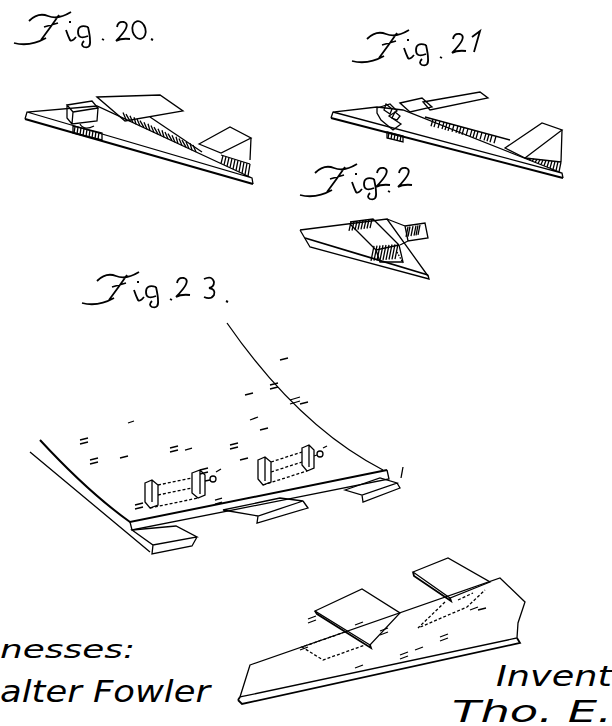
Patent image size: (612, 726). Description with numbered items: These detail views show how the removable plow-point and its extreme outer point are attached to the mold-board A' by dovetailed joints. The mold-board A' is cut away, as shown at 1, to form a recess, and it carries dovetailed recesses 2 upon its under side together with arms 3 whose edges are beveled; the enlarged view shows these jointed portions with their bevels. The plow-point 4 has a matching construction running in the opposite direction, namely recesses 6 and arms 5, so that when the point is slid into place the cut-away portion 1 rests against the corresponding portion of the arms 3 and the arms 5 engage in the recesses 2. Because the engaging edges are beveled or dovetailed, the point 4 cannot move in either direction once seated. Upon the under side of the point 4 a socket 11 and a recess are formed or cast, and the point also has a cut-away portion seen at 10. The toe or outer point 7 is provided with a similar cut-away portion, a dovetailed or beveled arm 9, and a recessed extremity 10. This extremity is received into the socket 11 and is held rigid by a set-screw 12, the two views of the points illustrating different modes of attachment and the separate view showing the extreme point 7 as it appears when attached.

In FIG. 20, the plow-point 4 is at (139, 142).
In FIG. 21, the plow-point 4 is at (447, 142).
In FIG. 23, the plow-point 4 is at (506, 624).
In FIG. 20, the arms 5 is at (271, 117).
In FIG. 21, the arms 5 is at (501, 87).
In FIG. 23, the arms 5 is at (451, 593).
In FIG. 20, the recesses 6 is at (188, 112).
In FIG. 21, the recesses 6 is at (480, 122).
In FIG. 23, the recesses 6 is at (361, 624).
In FIG. 22, the toe or outer point 7 is at (364, 249).
In FIG. 22, the dovetailed or beveled arm 9 is at (389, 231).
In FIG. 22, the cut-away portion / recessed extremity 10 is at (427, 232).
In FIG. 21, the socket 11 is at (404, 114).
In FIG. 21, the set-screw 12 is at (385, 99).
In FIG. 23, the cut-away portion 1 is at (320, 458).
In FIG. 23, the mold-board A' is at (236, 467).
In FIG. 23, the dovetailed recesses 2 is at (359, 493).
In FIG. 23, the arms 3 is at (220, 526).